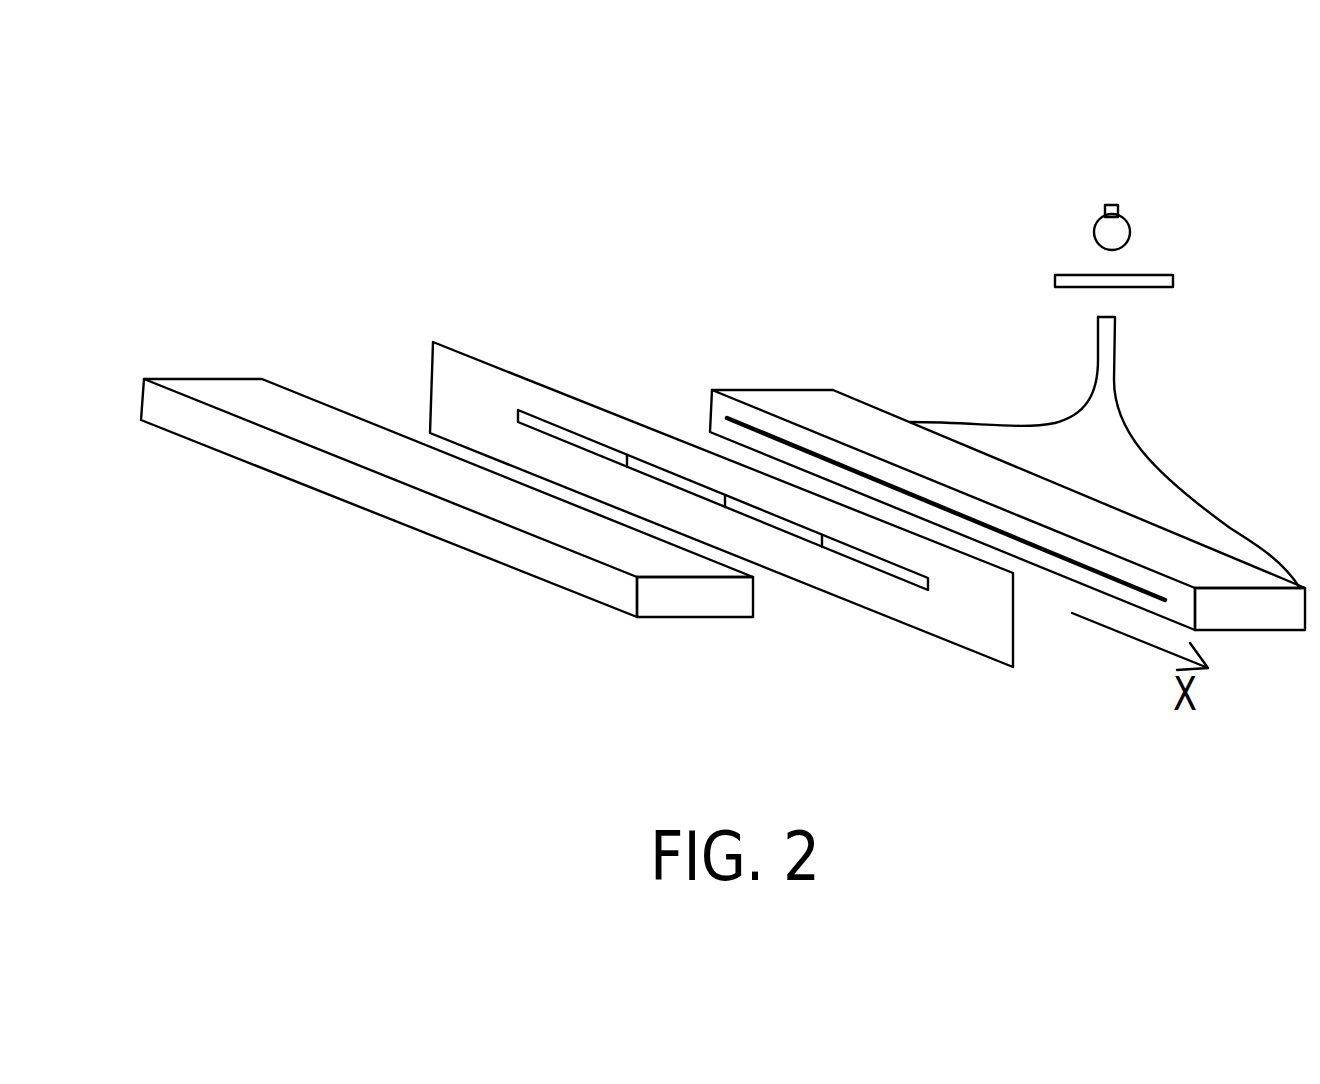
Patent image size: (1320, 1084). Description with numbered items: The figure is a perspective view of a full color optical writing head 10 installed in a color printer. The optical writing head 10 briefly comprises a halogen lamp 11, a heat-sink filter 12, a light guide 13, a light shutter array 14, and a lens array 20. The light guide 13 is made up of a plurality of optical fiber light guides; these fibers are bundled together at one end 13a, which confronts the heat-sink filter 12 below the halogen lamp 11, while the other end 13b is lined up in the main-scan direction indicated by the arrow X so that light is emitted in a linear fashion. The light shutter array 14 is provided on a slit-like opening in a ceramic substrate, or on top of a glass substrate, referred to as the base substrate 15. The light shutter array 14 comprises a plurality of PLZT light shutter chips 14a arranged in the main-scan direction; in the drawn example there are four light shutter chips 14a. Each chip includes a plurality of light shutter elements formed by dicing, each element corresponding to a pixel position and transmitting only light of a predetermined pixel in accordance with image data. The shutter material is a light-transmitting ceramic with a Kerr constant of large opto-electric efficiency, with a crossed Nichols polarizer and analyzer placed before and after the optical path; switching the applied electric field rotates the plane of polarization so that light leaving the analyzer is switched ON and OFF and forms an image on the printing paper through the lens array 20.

The full color optical writing head 10 is at (846, 204).
The halogen lamp 11 is at (1130, 223).
The heat-sink filter 12 is at (1177, 278).
The light guide 13 is at (1007, 473).
The one end of light guide 13a is at (1118, 327).
The other end of light guide 13b is at (880, 418).
The light shutter array 14 is at (710, 390).
The light shutter chip 14a is at (882, 267).
The base substrate 15 is at (957, 618).
The lens array 20 is at (318, 420).